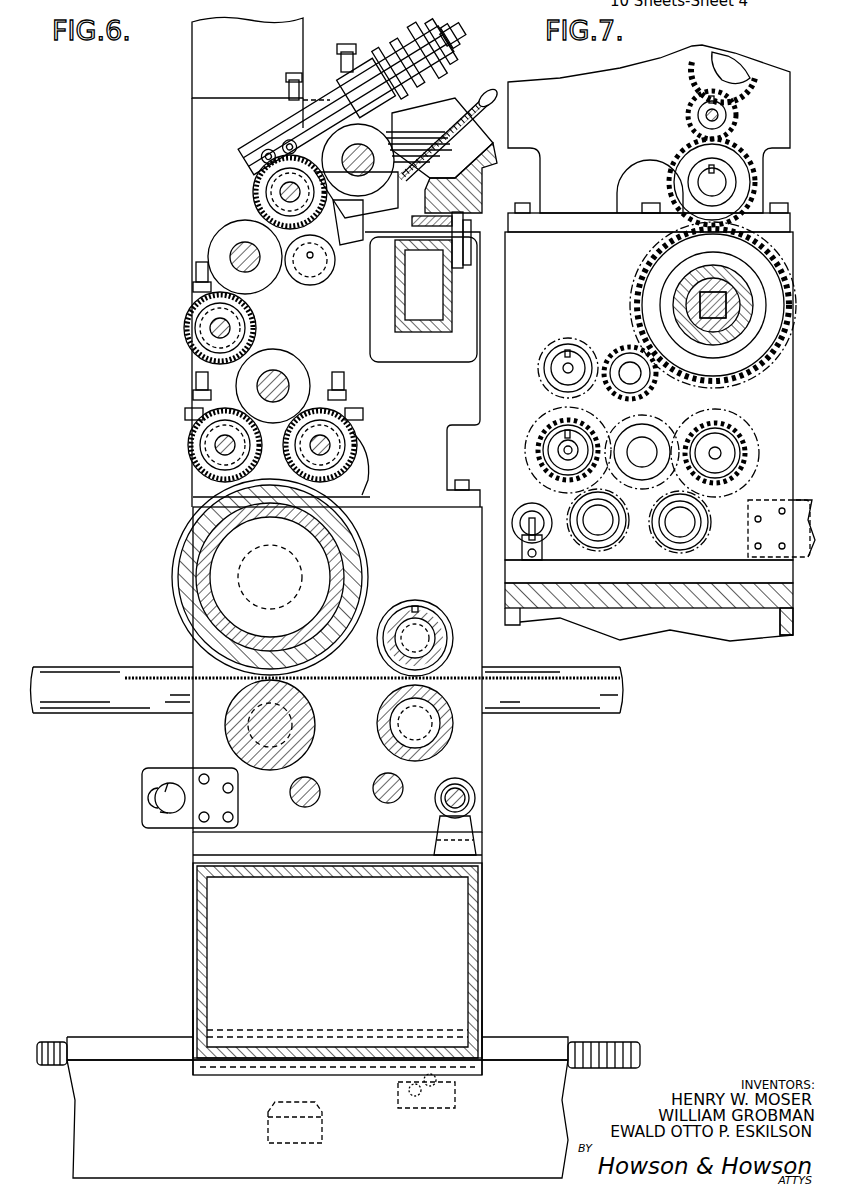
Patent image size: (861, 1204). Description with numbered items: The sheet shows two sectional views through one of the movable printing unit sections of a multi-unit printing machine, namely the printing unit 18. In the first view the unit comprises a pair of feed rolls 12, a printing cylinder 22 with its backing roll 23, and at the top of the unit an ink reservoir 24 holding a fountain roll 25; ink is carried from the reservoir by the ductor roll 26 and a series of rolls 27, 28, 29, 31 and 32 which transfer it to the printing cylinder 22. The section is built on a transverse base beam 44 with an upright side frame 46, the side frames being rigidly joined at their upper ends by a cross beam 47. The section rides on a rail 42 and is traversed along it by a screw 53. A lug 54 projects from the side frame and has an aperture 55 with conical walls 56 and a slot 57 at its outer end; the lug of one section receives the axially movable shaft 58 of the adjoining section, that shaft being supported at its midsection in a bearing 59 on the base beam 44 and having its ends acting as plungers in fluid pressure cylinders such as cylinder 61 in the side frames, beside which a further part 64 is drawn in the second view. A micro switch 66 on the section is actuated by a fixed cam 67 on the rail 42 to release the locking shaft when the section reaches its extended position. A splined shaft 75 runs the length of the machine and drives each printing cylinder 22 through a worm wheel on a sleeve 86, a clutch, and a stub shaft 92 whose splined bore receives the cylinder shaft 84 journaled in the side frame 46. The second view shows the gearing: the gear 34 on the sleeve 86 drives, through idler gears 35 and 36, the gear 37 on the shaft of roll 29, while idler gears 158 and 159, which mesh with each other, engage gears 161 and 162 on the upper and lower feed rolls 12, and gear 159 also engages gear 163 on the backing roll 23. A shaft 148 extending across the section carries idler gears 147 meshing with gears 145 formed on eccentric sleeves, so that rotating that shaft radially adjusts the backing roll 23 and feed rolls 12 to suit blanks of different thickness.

In FIG. 6, the feed rolls 12 is at (422, 608).
In FIG. 7, the feed rolls 12 is at (560, 368).
In FIG. 6, the printing unit 18 is at (190, 154).
In FIG. 7, the printing unit 18 is at (776, 206).
In FIG. 6, the printing cylinder 22 is at (368, 566).
In FIG. 6, the backing roll 23 is at (316, 725).
In FIG. 7, the backing roll 23 is at (736, 455).
In FIG. 6, the ink reservoir 24 is at (428, 118).
In FIG. 6, the fountain roll 25 is at (378, 128).
In FIG. 6, the ductor roll 26 is at (254, 205).
In FIG. 6, the ink roll 27 is at (210, 250).
In FIG. 6, the ink roll 28 is at (186, 328).
In FIG. 6, the ink roll 29 is at (286, 368).
In FIG. 6, the ink roll 31 is at (188, 448).
In FIG. 6, the ink roll 32 is at (352, 442).
In FIG. 7, the gear 34 is at (668, 258).
In FIG. 7, the idler gear 35 is at (735, 166).
In FIG. 7, the idler gear 36 is at (695, 78).
In FIG. 7, the gear 37 is at (686, 118).
In FIG. 6, the rail 42 is at (75, 1104).
In FIG. 6, the base beam 44 is at (482, 945).
In FIG. 7, the base beam 44 is at (740, 630).
In FIG. 6, the side frame 46 is at (483, 770).
In FIG. 7, the side frame 46 is at (506, 245).
In FIG. 6, the cross beam 47 is at (393, 292).
In FIG. 6, the screw 53 is at (598, 1044).
In FIG. 6, the lug 54 is at (238, 800).
In FIG. 7, the lug 54 is at (800, 500).
In FIG. 6, the aperture 55 is at (168, 784).
In FIG. 6, the conical walls 56 is at (166, 814).
In FIG. 6, the slot 57 is at (142, 795).
In FIG. 6, the shaft 58 is at (476, 800).
In FIG. 6, the bearing 59 is at (440, 808).
In FIG. 7, the fluid pressure cylinder 61 is at (528, 508).
In FIG. 7, the bracket 64 is at (522, 538).
In FIG. 6, the micro switch 66 is at (450, 1108).
In FIG. 6, the cam 67 is at (310, 1104).
In FIG. 6, the splined shaft 75 is at (88, 666).
In FIG. 7, the cylinder shaft 84 is at (708, 306).
In FIG. 7, the sleeve 86 is at (690, 290).
In FIG. 7, the stub shaft 92 is at (692, 312).
In FIG. 7, the gear 145 is at (526, 440).
In FIG. 7, the idler gear 147 is at (630, 515).
In FIG. 6, the shaft 148 is at (372, 790).
In FIG. 7, the shaft 148 is at (596, 522).
In FIG. 7, the idler gear 158 is at (612, 358).
In FIG. 7, the idler gear 159 is at (662, 425).
In FIG. 7, the gear 161 is at (556, 375).
In FIG. 7, the gear 162 is at (552, 432).
In FIG. 7, the gear 163 is at (725, 426).